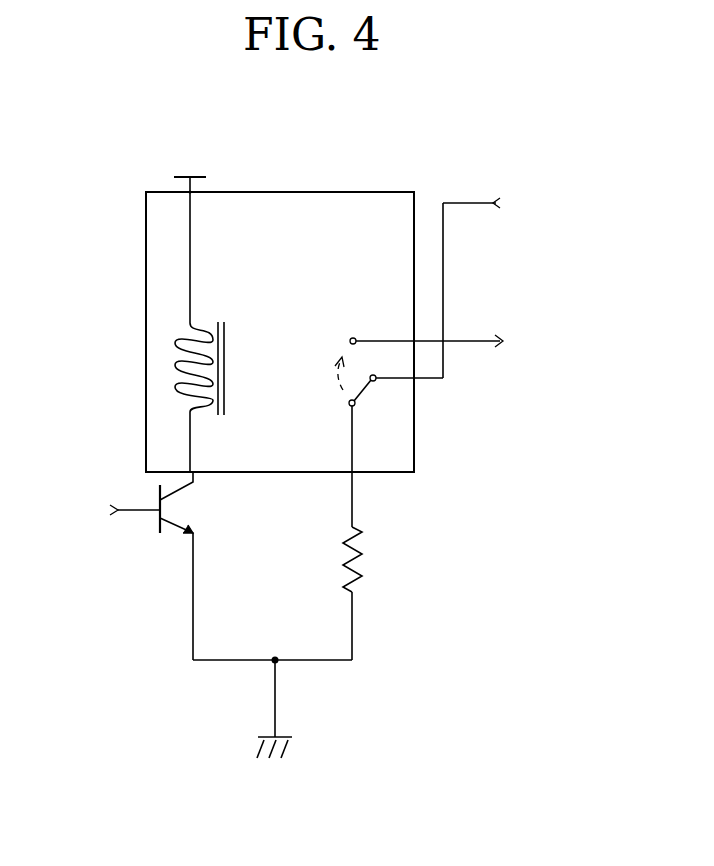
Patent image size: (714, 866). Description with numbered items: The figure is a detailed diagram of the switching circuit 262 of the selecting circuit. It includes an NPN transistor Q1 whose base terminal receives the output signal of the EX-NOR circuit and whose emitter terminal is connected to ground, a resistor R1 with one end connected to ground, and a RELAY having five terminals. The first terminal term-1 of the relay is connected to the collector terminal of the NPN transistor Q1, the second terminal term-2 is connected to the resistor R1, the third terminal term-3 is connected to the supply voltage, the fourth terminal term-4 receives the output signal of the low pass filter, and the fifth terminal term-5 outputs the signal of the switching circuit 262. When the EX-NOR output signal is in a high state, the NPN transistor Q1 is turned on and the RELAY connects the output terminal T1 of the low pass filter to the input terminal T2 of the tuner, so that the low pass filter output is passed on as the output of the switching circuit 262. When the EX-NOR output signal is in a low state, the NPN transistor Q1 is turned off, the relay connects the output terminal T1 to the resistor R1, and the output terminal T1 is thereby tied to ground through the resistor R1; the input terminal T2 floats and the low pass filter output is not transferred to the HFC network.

The switching circuit 262 is at (115, 135).
The relay RELAY is at (360, 192).
The first terminal term-1 is at (193, 470).
The second terminal term-2 is at (352, 468).
The third terminal term-3 is at (193, 196).
The fourth terminal term-4 is at (410, 380).
The fifth terminal term-5 is at (413, 341).
The output terminal T1 is at (468, 203).
The input terminal T2 is at (468, 341).
The NPN transistor Q1 is at (165, 566).
The resistor R1 is at (370, 559).